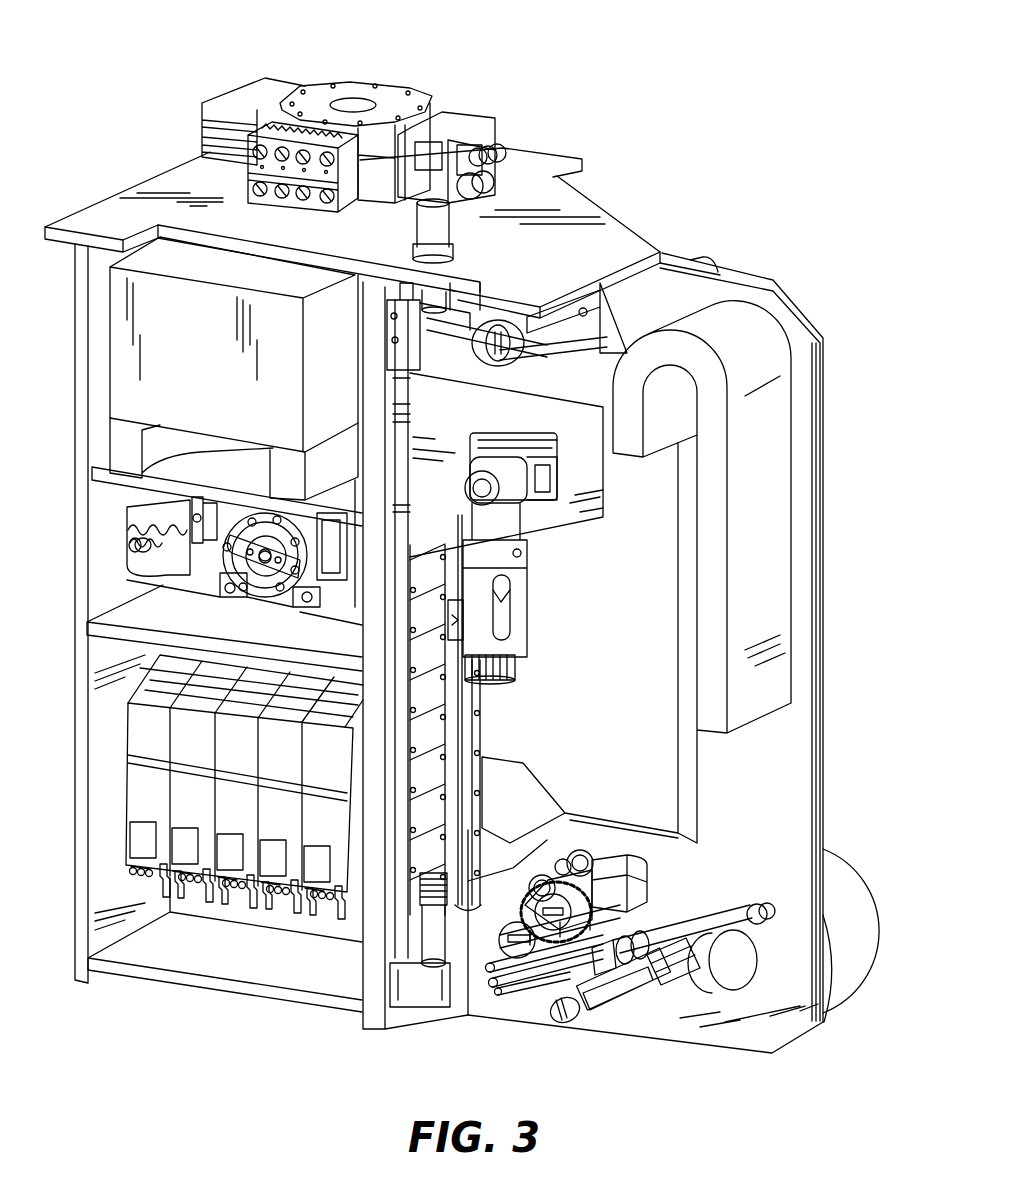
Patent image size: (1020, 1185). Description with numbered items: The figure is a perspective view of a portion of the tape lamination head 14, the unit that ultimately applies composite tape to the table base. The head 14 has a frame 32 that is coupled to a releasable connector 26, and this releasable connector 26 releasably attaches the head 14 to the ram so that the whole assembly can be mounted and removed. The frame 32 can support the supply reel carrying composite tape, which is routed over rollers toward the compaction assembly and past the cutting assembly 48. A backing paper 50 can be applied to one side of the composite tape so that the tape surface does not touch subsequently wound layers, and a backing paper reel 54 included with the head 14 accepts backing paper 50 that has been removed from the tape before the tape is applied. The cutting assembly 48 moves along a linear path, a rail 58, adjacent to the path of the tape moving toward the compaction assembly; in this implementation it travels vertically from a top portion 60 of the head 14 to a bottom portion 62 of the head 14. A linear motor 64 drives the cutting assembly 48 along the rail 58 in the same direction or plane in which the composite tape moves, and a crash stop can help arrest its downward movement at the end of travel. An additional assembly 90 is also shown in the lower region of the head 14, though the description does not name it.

The tape lamination head 14 is at (620, 119).
The releasable connector 26 is at (339, 72).
The frame 32 is at (766, 815).
The cutting assembly 48 is at (571, 555).
The backing paper 50 is at (869, 944).
The backing paper reel 54 is at (833, 1022).
The rail 58 is at (490, 739).
The top portion 60 is at (455, 287).
The bottom portion 62 is at (462, 1017).
The linear motor 64 is at (440, 788).
The actuator assembly 90 is at (571, 791).